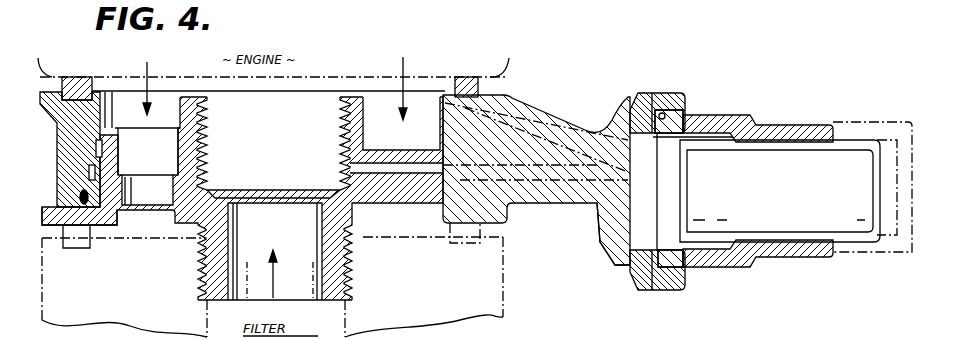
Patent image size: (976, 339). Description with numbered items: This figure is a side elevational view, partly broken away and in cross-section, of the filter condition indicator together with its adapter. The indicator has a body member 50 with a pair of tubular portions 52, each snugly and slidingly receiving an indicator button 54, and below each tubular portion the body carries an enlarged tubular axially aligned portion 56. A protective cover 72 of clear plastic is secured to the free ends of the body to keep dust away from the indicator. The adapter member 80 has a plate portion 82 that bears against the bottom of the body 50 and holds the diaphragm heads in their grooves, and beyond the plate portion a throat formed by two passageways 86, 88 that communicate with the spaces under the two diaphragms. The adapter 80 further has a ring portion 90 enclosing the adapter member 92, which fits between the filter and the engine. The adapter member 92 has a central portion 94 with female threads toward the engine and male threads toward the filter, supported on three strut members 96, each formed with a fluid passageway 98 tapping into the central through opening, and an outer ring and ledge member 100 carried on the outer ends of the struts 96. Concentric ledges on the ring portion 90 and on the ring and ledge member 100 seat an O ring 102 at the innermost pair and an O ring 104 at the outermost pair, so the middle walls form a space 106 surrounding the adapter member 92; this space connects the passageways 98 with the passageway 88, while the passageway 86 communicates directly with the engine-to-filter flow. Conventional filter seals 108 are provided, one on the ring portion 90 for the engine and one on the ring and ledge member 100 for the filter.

The body member 50 is at (713, 98).
The tubular portions 52 is at (822, 256).
The indicator button 54 is at (773, 230).
The enlarged tubular axially aligned portion 56 is at (708, 266).
The protective cover 72 is at (866, 118).
The adapter member 80 is at (548, 210).
The plate portion 82 is at (607, 246).
The passageway 86 is at (508, 97).
The passageway 88 is at (578, 180).
The ring portion 90 is at (85, 172).
The adapter member 92 is at (199, 284).
The central portion 94 is at (171, 171).
The strut members 96 is at (402, 190).
The fluid passageway 98 is at (346, 155).
The ring and ledge member 100 is at (452, 210).
The O ring 102 is at (97, 144).
The O ring 104 is at (52, 227).
The space 106 is at (82, 197).
The filter seals 108 is at (76, 80).